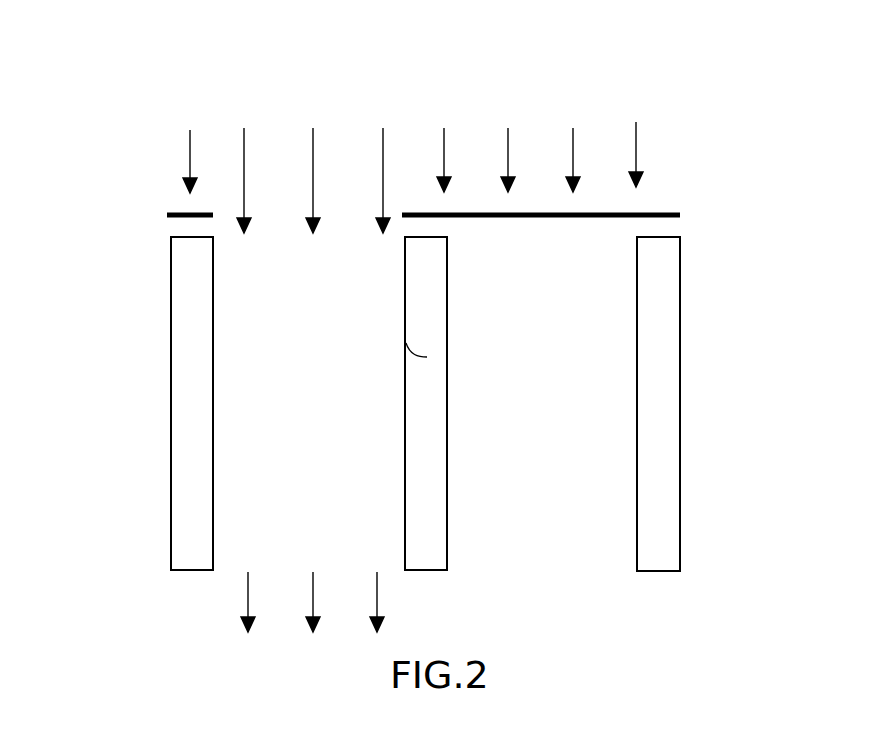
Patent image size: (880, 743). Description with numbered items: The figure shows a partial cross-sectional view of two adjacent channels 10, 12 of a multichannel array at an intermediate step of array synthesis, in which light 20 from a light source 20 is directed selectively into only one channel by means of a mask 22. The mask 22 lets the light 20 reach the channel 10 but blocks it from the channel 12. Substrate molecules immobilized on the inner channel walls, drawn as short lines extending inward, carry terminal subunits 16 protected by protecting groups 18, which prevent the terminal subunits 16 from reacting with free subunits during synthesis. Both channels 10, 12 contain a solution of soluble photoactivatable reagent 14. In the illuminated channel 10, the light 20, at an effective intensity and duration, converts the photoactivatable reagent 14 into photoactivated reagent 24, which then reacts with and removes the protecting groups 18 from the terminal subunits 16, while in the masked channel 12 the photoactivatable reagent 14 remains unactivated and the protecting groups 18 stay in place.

The channel 10 is at (296, 122).
The channel 12 is at (529, 122).
The photoactivatable reagent 14 is at (575, 400).
The terminal subunit 16 is at (235, 389).
The protecting group 18 is at (267, 388).
The light source 20 is at (182, 166).
The mask 22 is at (160, 214).
The photoactivated reagent 24 is at (257, 455).